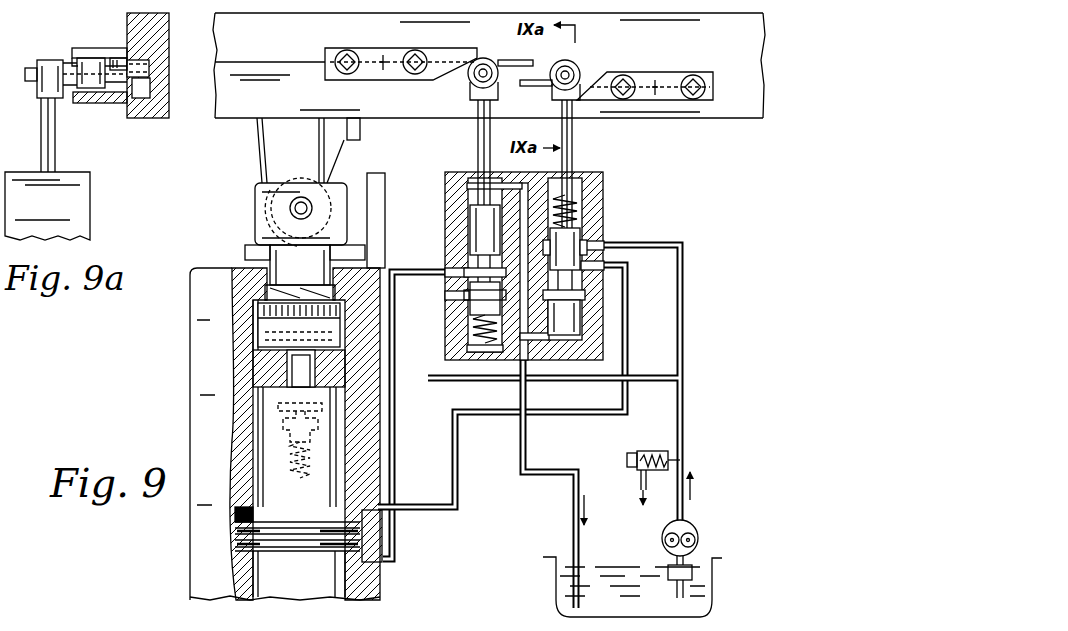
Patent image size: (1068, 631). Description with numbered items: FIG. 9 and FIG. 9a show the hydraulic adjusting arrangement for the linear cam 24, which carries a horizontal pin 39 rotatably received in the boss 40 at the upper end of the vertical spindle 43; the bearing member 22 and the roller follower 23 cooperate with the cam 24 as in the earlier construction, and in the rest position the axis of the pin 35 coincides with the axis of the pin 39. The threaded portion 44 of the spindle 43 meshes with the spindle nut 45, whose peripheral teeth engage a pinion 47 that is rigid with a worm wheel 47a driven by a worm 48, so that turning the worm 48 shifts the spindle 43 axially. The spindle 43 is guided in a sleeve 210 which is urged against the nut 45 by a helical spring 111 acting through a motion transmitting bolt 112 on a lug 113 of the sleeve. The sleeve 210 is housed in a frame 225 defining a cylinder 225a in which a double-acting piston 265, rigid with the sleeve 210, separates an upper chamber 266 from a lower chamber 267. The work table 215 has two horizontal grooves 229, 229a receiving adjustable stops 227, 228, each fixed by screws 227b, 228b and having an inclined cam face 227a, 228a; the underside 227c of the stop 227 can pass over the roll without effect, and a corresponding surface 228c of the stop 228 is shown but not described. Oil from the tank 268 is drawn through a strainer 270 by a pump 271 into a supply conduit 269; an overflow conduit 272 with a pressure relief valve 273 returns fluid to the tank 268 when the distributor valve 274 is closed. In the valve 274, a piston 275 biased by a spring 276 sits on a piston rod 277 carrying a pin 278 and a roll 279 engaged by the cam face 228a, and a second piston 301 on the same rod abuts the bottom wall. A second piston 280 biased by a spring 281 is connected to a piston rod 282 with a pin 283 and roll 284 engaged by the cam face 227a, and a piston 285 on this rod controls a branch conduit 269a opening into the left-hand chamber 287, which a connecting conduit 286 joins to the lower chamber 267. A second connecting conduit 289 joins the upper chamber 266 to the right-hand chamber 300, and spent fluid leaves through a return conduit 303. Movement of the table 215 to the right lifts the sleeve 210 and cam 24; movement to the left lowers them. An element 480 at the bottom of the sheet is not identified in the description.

In FIG. 9, the bearing member 22 is at (259, 150).
In FIG. 9, the roller follower 23 is at (299, 178).
In FIG. 9, the linear cam 24 is at (262, 252).
In FIG. 9, the pin 35 is at (266, 190).
In FIG. 9, the horizontal pin 39 is at (313, 205).
In FIG. 9, the boss 40 is at (257, 204).
In FIG. 9, the spindle 43 is at (290, 375).
In FIG. 9, the threaded portion 44 is at (342, 300).
In FIG. 9, the spindle nut 45 is at (257, 310).
In FIG. 9, the pinion 47 is at (341, 330).
In FIG. 9, the worm wheel 47a is at (345, 363).
In FIG. 9, the worm 48 is at (311, 370).
In FIG. 9, the helical spring 111 is at (294, 478).
In FIG. 9, the motion transmitting bolt 112 is at (291, 432).
In FIG. 9, the lug 113 is at (323, 407).
In FIG. 9, the sleeve 210 is at (265, 408).
In FIG. 9A, the work table 215 is at (170, 96).
In FIG. 9, the frame 225 is at (199, 338).
In FIG. 9, the cylinder 225a is at (246, 597).
In FIG. 9A, the adjustable stop 227 is at (93, 48).
In FIG. 9, the adjustable stop 227 is at (397, 50).
In FIG. 9A, the cam face 227a is at (118, 58).
In FIG. 9, the cam face 227a is at (456, 78).
In FIG. 9, the screws 227b is at (337, 55).
In FIG. 9, the underside 227c is at (370, 81).
In FIG. 9A, the adjustable stop 228 is at (108, 103).
In FIG. 9, the adjustable stop 228 is at (669, 80).
In FIG. 9, the cam face 228a is at (598, 88).
In FIG. 9, the screws 228b is at (702, 76).
In FIG. 9, the plate edge 228c is at (648, 70).
In FIG. 9A, the groove 229 is at (170, 46).
In FIG. 9, the groove 229 is at (253, 72).
In FIG. 9A, the groove 229a is at (146, 98).
In FIG. 9, the groove 229a is at (530, 86).
In FIG. 9, the double-acting piston 265 is at (240, 535).
In FIG. 9, the upper chamber 266 is at (235, 520).
In FIG. 9, the lower chamber 267 is at (236, 555).
In FIG. 9, the oil tank 268 is at (556, 575).
In FIG. 9, the supply conduit 269 is at (683, 400).
In FIG. 9, the branch conduit 269a is at (657, 357).
In FIG. 9, the strainer 270 is at (670, 567).
In FIG. 9, the hydraulic pump 271 is at (698, 528).
In FIG. 9, the overflow conduit 272 is at (648, 485).
In FIG. 9, the pressure relief valve 273 is at (652, 451).
In FIG. 9A, the distributor valve 274 is at (96, 204).
In FIG. 9, the distributor valve 274 is at (607, 341).
In FIG. 9, the piston 275 is at (573, 236).
In FIG. 9, the spring 276 is at (580, 205).
In FIG. 9A, the piston rod 277 is at (45, 140).
In FIG. 9, the piston rod 277 is at (574, 140).
In FIG. 9A, the horizontal pin 278 is at (48, 70).
In FIG. 9, the horizontal pin 278 is at (562, 60).
In FIG. 9A, the roll 279 is at (88, 66).
In FIG. 9, the roll 279 is at (580, 72).
In FIG. 9, the second piston 280 is at (479, 222).
In FIG. 9, the helical spring 281 is at (482, 352).
In FIG. 9, the piston rod 282 is at (478, 133).
In FIG. 9, the horizontal pin 283 is at (484, 58).
In FIG. 9, the second roll 284 is at (508, 60).
In FIG. 9, the second piston 285 is at (477, 305).
In FIG. 9, the connecting conduit 286 is at (396, 534).
In FIG. 9, the left-hand chamber 287 is at (463, 268).
In FIG. 9, the second connecting conduit 289 is at (423, 505).
In FIG. 9, the right-hand chamber 300 is at (579, 275).
In FIG. 9, the second piston 301 is at (561, 335).
In FIG. 9, the return conduit 303 is at (573, 505).
In FIG. 9, the base 480 is at (647, 624).